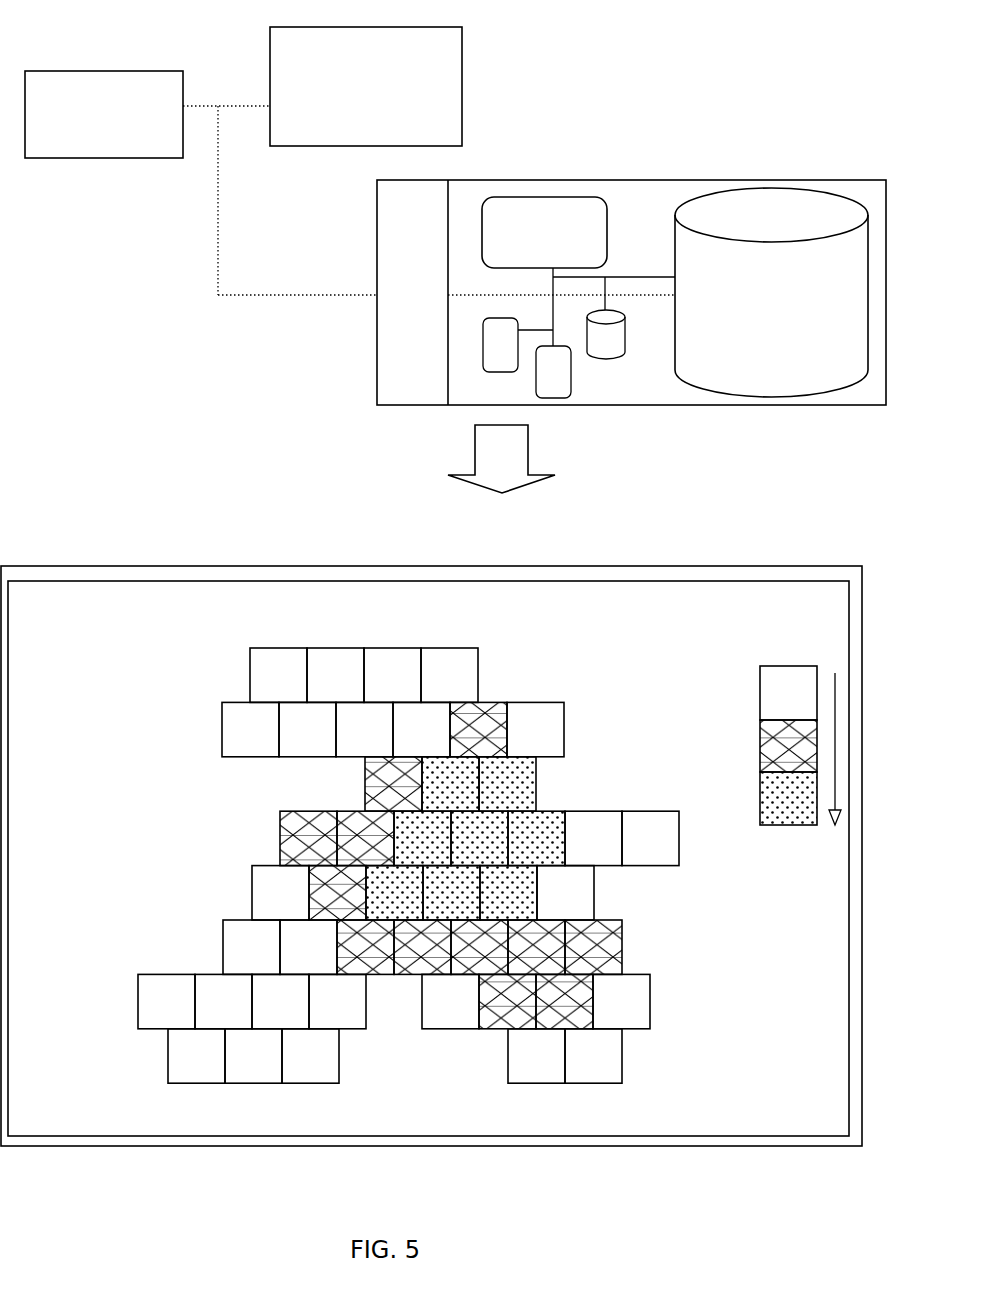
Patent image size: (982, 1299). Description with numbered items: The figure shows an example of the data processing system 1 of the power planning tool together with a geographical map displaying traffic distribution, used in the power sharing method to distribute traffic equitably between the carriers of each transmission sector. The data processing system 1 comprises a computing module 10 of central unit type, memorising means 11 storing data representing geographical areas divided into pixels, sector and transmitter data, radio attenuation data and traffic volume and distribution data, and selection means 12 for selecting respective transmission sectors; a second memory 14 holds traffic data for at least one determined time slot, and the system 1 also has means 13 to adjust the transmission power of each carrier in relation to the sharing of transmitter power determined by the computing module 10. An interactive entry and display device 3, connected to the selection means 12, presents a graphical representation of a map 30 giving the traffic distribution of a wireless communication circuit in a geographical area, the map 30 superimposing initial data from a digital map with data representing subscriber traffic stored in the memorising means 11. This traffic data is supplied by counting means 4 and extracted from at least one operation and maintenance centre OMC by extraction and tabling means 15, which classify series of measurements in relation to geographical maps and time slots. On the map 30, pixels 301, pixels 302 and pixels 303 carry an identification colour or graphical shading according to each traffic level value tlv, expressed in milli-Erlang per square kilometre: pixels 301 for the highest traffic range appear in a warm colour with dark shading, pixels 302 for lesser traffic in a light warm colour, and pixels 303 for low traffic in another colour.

The operation and maintenance centre OMC is at (107, 70).
The counting means 4 is at (278, 70).
The data processing system 1 is at (364, 220).
The extraction and tabling means 15 is at (395, 354).
The computing module 10 is at (533, 198).
The memorising means 11 is at (718, 208).
The second memory 14 is at (607, 352).
The means to adjust the transmission power 13 is at (490, 360).
The selection means 12 is at (553, 380).
The interactive entry and display device 3 is at (95, 575).
The map 30 is at (423, 795).
The pixels 301 is at (523, 787).
The pixels 302 is at (610, 940).
The pixels 303 is at (238, 938).
The traffic level value tlv is at (778, 649).